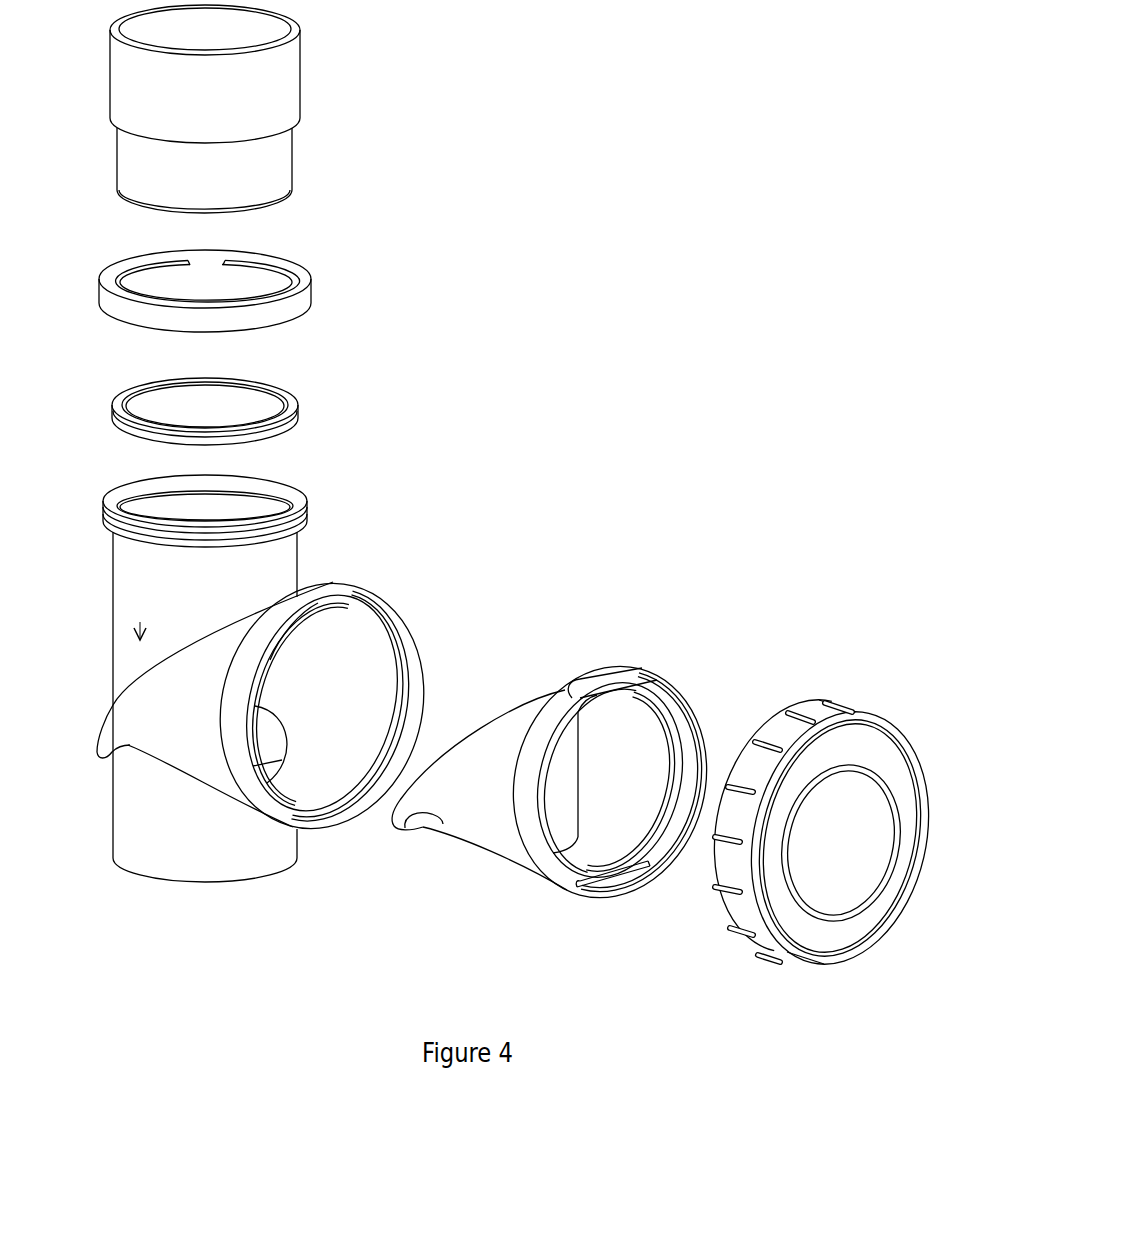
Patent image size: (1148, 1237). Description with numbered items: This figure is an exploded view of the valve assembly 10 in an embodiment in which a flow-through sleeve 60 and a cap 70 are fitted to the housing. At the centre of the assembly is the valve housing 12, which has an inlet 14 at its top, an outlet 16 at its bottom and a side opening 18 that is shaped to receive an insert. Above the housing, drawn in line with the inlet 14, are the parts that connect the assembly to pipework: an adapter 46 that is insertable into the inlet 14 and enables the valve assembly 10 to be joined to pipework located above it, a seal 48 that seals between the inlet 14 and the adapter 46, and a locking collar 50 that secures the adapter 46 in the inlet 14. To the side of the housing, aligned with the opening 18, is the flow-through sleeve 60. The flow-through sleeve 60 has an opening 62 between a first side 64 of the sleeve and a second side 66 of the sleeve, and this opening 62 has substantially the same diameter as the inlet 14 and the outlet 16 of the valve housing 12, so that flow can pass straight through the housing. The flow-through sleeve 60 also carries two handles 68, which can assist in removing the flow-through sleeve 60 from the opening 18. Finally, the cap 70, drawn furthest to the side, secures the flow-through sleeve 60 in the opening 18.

The valve assembly 10 is at (530, 258).
The valve housing 12 is at (272, 708).
The inlet 14 is at (168, 518).
The outlet 16 is at (170, 888).
The opening 18 is at (333, 697).
The adapter 46 is at (278, 82).
The seal 48 is at (285, 425).
The locking collar 50 is at (298, 305).
The flow-through sleeve 60 is at (562, 765).
The opening 62 is at (438, 837).
The first side 64 is at (537, 690).
The second side 66 is at (495, 853).
The handles 68 is at (592, 680).
The cap 70 is at (892, 753).